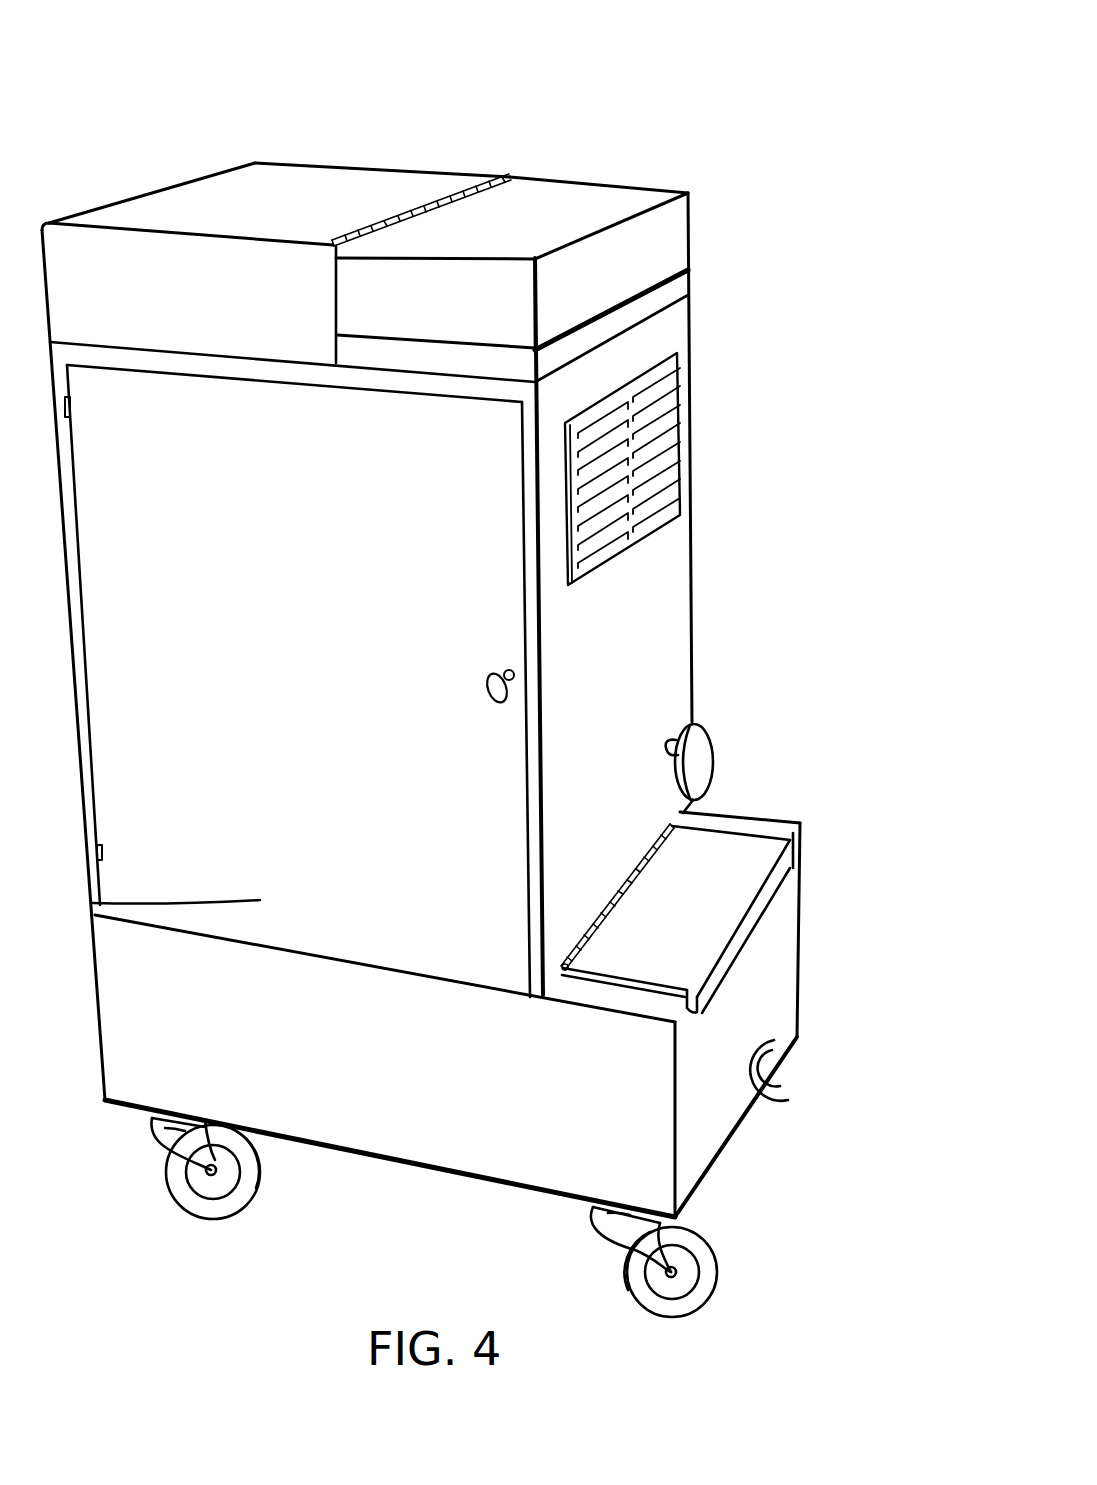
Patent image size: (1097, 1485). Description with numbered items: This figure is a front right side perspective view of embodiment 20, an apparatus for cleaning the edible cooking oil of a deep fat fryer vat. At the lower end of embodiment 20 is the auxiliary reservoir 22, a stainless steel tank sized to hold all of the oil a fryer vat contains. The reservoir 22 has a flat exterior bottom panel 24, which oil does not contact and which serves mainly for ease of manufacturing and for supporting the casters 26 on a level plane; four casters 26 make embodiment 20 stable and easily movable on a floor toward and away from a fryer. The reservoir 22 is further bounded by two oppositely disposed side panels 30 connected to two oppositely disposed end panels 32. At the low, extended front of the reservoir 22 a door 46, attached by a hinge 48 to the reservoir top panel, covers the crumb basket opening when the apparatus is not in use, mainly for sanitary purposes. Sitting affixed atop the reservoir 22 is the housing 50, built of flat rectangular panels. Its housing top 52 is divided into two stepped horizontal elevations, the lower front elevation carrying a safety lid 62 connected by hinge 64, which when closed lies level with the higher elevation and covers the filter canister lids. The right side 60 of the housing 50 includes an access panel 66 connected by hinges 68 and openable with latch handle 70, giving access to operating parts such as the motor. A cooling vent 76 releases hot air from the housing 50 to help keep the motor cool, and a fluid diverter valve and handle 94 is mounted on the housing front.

The embodiment 20 is at (226, 130).
The auxiliary reservoir 22 is at (455, 1096).
The flat exterior bottom panel 24 is at (352, 1150).
The casters 26 is at (716, 1272).
The side panels 30 is at (160, 1073).
The end panels 32 is at (772, 1002).
The door 46 is at (732, 888).
The hinge 48 is at (655, 850).
The housing 50 is at (678, 317).
The housing top 52 is at (358, 180).
The right side 60 is at (148, 900).
The safety lid 62 is at (580, 197).
The hinge 64 is at (443, 195).
The access panel 66 is at (300, 606).
The hinges 68 is at (70, 405).
The latch handle 70 is at (488, 694).
The air circulation cooling vent 76 is at (668, 442).
The fluid diverter valve and handle 94 is at (700, 735).